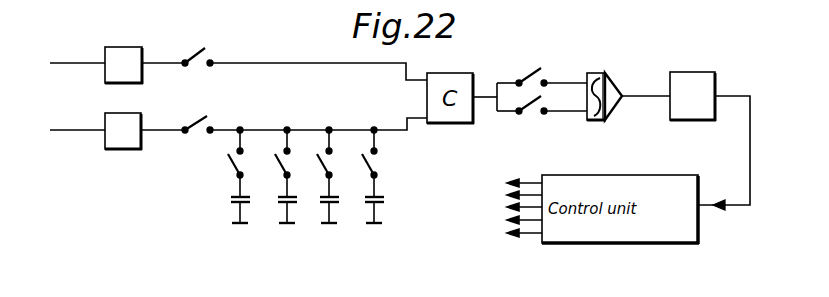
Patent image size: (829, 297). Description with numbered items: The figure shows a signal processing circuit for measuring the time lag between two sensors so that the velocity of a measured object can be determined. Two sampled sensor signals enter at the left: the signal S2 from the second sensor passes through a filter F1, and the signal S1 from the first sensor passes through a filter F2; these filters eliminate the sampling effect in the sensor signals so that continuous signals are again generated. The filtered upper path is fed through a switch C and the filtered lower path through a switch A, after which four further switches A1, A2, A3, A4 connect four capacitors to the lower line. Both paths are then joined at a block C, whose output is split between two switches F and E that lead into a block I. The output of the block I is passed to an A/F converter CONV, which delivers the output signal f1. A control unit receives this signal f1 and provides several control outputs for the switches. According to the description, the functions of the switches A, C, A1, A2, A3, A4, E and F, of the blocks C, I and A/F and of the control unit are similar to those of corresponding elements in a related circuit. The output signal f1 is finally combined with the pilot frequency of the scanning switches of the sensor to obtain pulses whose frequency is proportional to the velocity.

The second sensor signal S2 is at (77, 52).
The first sensor signal S1 is at (77, 120).
The filter F1 is at (124, 65).
The filter F2 is at (123, 131).
The switch C is at (196, 47).
The switch A is at (193, 117).
The switch A1 is at (223, 175).
The switch A2 is at (273, 175).
The switch A3 is at (316, 175).
The switch A4 is at (360, 175).
The switch F is at (530, 66).
The switch E is at (524, 100).
The block I is at (598, 73).
The A/F converter CONV is at (687, 72).
The output signal f1 is at (719, 220).